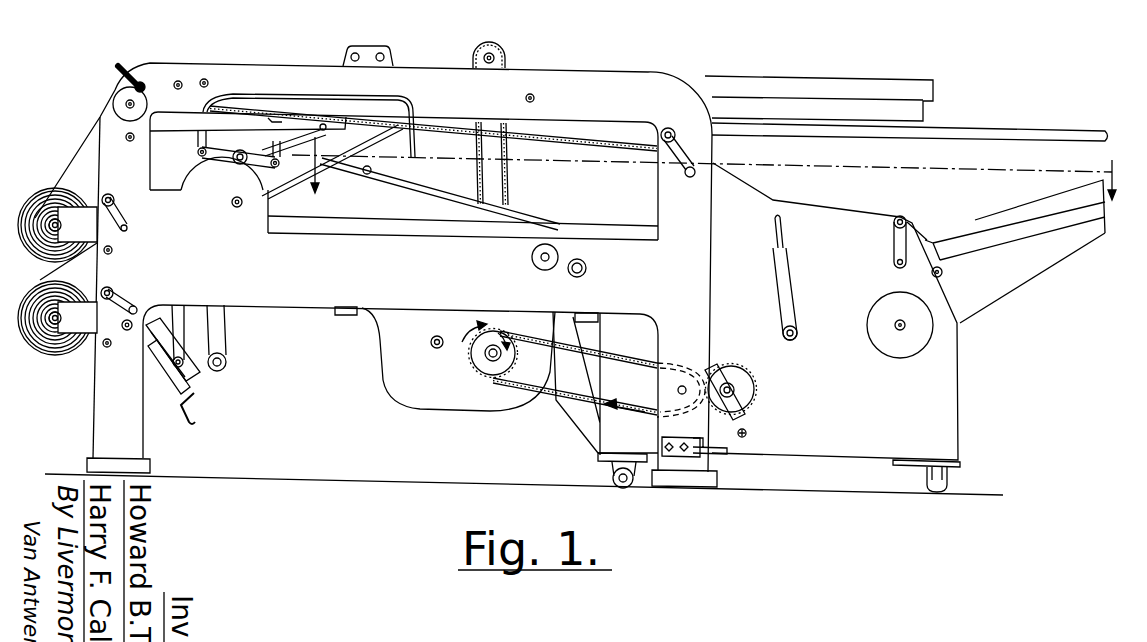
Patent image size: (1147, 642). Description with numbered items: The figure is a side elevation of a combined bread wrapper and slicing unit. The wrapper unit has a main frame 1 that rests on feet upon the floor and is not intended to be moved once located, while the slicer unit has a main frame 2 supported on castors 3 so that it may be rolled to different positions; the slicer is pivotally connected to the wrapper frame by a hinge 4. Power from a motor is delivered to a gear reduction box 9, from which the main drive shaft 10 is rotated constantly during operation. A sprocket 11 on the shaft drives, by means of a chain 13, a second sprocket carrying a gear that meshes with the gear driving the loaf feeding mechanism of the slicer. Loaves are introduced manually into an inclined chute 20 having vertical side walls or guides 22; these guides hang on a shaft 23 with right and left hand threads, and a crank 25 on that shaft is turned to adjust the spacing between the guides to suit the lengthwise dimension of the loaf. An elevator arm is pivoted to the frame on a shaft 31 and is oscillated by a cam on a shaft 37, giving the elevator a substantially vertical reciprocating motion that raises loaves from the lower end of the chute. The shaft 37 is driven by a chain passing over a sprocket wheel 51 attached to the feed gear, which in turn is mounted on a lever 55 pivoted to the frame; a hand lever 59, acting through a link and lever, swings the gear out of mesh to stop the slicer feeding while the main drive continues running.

The main frame of the bread wrapper unit 1 is at (626, 90).
The main frame of the slicer unit 2 is at (976, 401).
The castors 3 is at (613, 478).
The hinge 4 is at (700, 448).
The gear reduction box 9 is at (397, 351).
The main drive shaft 10 is at (489, 358).
The sprocket 11 is at (480, 352).
The chain 13 is at (638, 400).
The inclined chute 20 is at (988, 243).
The side walls or guides 22 is at (980, 218).
The shaft 23 is at (900, 216).
The crank 25 is at (896, 243).
The shaft 31 is at (943, 274).
The shaft 37 is at (896, 324).
The sprocket wheel 51 is at (752, 383).
The lever 55 is at (752, 397).
The hand lever 59 is at (775, 273).